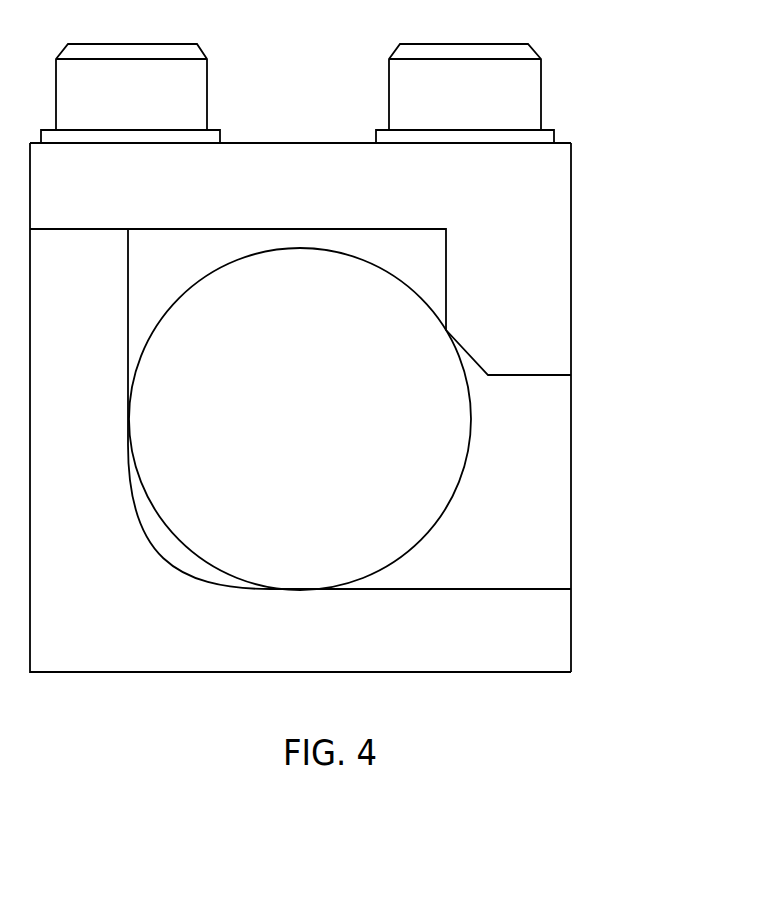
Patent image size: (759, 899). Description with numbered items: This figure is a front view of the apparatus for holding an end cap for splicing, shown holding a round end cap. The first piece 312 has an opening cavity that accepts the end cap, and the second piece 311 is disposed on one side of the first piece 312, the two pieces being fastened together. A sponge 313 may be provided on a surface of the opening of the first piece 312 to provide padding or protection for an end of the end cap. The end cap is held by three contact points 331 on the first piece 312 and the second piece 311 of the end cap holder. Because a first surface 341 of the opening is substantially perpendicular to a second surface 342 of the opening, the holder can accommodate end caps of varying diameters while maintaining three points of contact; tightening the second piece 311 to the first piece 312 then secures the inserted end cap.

The second piece 311 is at (563, 195).
The first piece 312 is at (60, 655).
The sponge 313 is at (557, 508).
The contact points 331 is at (129, 412).
The first surface 341 is at (458, 590).
The second surface 342 is at (127, 293).